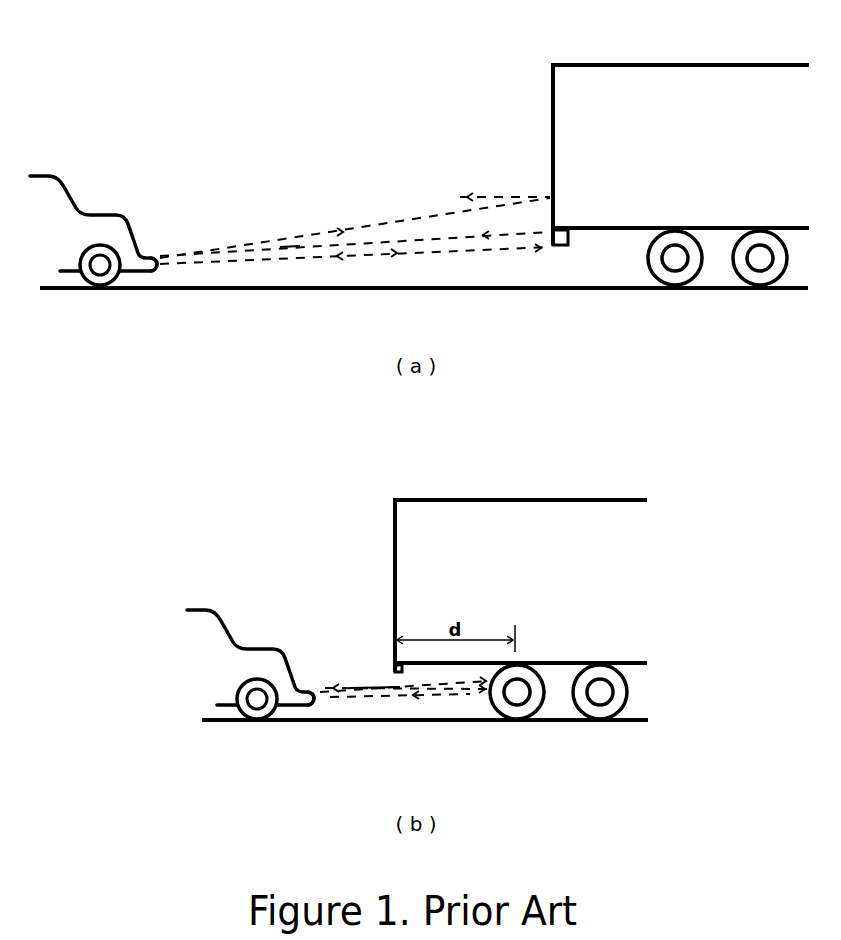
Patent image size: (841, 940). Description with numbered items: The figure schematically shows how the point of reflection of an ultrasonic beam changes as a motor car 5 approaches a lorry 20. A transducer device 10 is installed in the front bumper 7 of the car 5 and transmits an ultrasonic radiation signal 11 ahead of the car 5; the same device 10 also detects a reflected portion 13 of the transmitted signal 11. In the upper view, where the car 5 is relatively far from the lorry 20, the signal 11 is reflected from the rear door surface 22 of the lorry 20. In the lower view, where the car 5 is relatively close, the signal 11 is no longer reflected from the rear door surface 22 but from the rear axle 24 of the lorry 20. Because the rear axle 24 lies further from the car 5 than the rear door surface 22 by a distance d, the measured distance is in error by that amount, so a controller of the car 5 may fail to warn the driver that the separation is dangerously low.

The motor car 5 is at (35, 175).
The front bumper 7 is at (140, 266).
The transducer device 10 is at (155, 257).
The ultrasonic radiation signal 11 is at (443, 252).
The reflected portion 13 is at (288, 255).
The lorry 20 is at (630, 83).
The rear door surface 22 is at (552, 147).
The rear axle 24 is at (518, 693).